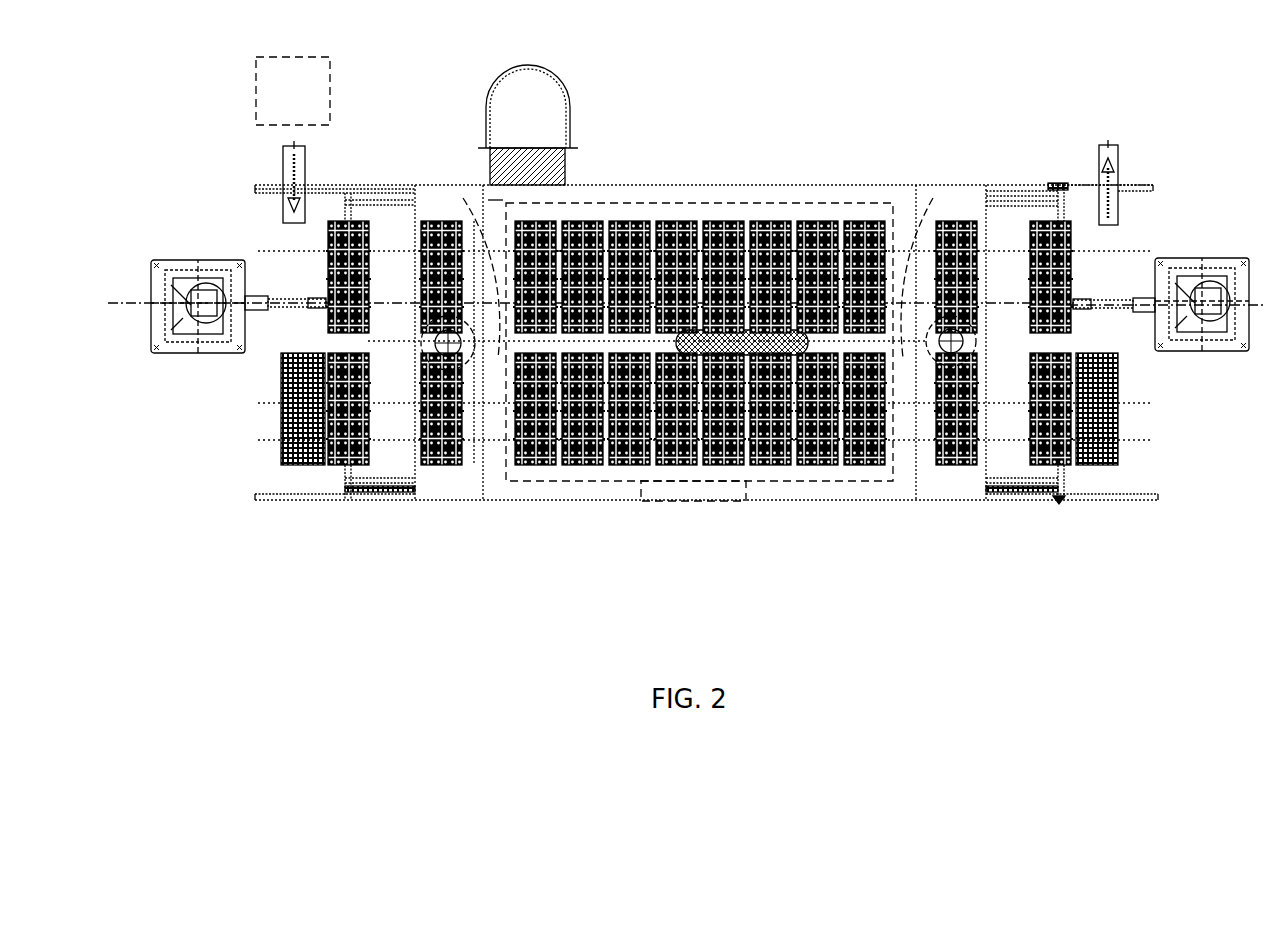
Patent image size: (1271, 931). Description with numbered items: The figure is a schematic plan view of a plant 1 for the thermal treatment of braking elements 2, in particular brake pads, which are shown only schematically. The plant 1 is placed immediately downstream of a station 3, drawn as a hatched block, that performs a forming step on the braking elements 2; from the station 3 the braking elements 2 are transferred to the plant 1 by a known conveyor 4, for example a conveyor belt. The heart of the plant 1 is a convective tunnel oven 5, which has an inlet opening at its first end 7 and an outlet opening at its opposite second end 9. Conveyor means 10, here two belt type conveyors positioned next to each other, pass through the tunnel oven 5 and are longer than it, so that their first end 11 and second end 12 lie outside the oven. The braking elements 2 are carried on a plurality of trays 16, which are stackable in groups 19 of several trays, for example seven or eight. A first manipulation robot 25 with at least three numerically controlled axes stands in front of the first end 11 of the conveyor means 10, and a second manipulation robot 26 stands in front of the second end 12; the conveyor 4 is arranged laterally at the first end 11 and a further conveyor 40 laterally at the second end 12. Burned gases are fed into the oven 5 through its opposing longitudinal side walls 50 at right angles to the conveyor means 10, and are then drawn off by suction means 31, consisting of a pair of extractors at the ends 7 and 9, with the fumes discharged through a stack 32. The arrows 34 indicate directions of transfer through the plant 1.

The plant 1 is at (1096, 82).
The braking elements 2 is at (324, 213).
The station 3 is at (252, 72).
The conveyor 4 is at (283, 152).
The convective tunnel oven 5 is at (785, 492).
The first end 7 is at (466, 455).
The second end 9 is at (935, 180).
The conveyor means 10 is at (375, 465).
The first end 11 is at (330, 468).
The second end 12 is at (1078, 462).
The trays 16 is at (418, 212).
The groups 19 is at (812, 212).
The first manipulation robot 25 is at (157, 248).
The second manipulation robot 26 is at (1222, 248).
The suction means 31 is at (470, 265).
The stack 32 is at (556, 92).
The transfer direction 34 is at (480, 192).
The conveyor 40 is at (1110, 148).
The longitudinal side walls 50 is at (672, 177).